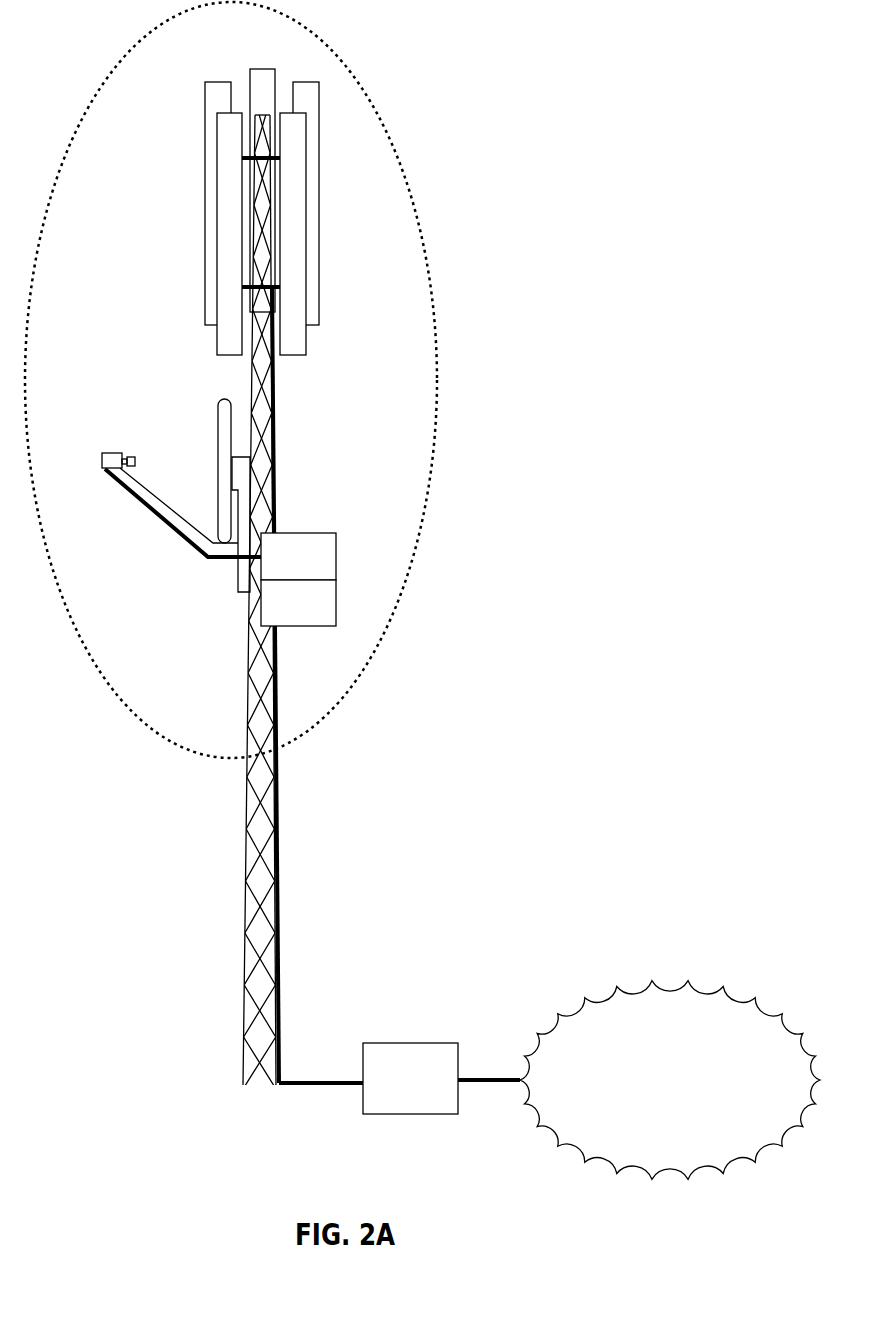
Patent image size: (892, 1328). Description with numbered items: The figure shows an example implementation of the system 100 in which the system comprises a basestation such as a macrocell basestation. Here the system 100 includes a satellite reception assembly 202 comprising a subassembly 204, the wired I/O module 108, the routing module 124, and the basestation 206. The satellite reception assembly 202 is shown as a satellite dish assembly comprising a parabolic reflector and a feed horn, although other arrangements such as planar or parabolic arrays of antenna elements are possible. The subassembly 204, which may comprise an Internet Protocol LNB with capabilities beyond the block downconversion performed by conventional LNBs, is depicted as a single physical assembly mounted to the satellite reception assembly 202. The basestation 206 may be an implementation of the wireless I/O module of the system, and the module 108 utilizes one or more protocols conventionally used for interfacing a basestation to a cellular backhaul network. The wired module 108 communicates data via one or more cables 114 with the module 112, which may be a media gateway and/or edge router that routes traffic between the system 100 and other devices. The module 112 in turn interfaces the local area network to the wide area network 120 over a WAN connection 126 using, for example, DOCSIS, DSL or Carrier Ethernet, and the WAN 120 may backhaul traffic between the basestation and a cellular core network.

The system 100 is at (430, 264).
The basestation 206 is at (194, 80).
The satellite reception assembly 202 is at (193, 433).
The subassembly 204 is at (102, 453).
The routing module 124 is at (315, 569).
The wired I/O module 108 is at (315, 615).
The cables 114 is at (327, 1082).
The module 112 is at (428, 1087).
The WAN connection 126 is at (477, 1080).
The wide area network (WAN) 120 is at (688, 1101).